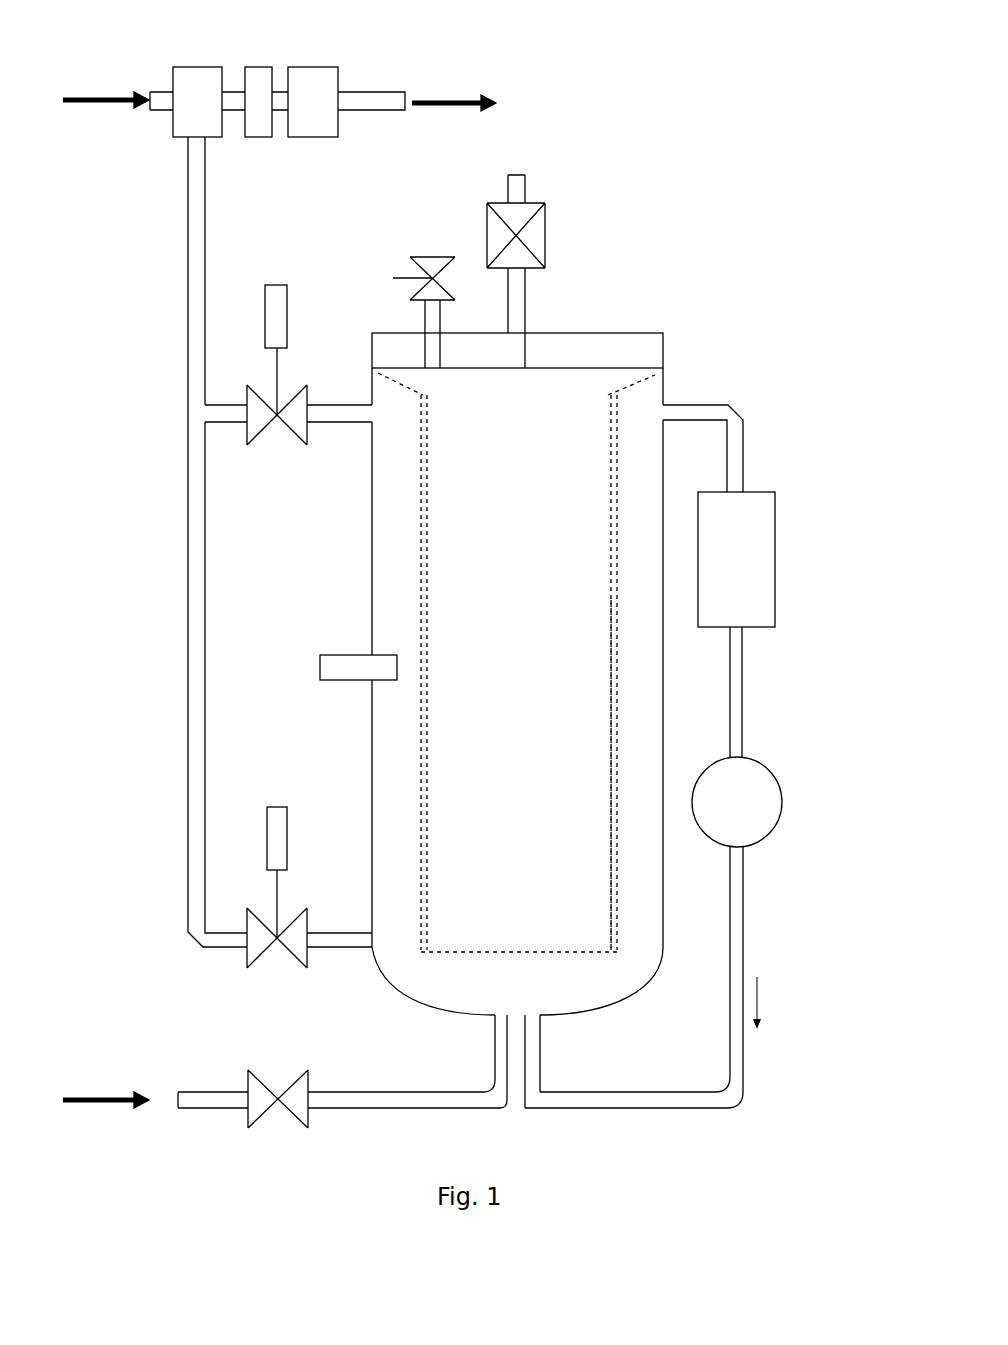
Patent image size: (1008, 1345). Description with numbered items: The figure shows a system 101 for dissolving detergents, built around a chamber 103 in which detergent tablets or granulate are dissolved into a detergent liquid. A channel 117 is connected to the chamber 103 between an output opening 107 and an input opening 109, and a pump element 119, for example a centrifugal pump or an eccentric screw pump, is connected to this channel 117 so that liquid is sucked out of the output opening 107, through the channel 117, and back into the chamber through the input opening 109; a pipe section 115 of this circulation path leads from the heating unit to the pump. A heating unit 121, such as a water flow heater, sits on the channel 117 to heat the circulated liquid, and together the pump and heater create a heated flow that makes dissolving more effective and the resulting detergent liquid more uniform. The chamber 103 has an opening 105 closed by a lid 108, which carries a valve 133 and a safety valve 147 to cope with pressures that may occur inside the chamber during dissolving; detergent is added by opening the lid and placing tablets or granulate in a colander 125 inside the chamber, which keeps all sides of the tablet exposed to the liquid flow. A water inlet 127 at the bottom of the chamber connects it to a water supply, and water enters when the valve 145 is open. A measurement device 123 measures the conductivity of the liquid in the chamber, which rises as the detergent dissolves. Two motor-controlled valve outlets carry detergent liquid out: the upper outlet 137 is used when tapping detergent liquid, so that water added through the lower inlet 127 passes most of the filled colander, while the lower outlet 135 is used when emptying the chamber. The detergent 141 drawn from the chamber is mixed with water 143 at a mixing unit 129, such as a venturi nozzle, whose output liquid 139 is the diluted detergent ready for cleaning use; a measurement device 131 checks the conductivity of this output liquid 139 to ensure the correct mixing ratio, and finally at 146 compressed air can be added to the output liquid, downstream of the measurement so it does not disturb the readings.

The system 101 is at (633, 245).
The chamber 103 is at (605, 1008).
The opening 105 is at (463, 373).
The output opening 107 is at (655, 416).
The lid 108 is at (608, 326).
The input opening 109 is at (535, 1015).
The recirculation pipe 115 is at (750, 695).
The channel 117 is at (743, 458).
The pump element 119 is at (770, 790).
The heating unit 121 is at (758, 540).
The measurement device 123 is at (338, 668).
The colander 125 is at (612, 792).
The water inlet 127 is at (492, 1013).
The mixing unit 129 is at (172, 137).
The measurement device 131 is at (260, 62).
The valve 133 is at (527, 203).
The motor-controlled valve outlet 135 is at (270, 805).
The motor-controlled valve outlet 137 is at (277, 284).
The output liquid 139 is at (436, 106).
The detergent 141 is at (186, 232).
The water 143 is at (112, 93).
The valve 145 is at (262, 1130).
The compressed air addition 146 is at (325, 57).
The safety valve 147 is at (437, 253).